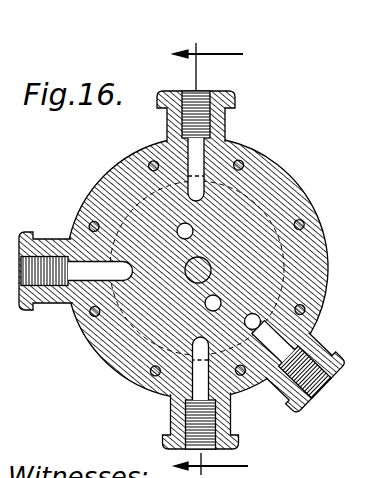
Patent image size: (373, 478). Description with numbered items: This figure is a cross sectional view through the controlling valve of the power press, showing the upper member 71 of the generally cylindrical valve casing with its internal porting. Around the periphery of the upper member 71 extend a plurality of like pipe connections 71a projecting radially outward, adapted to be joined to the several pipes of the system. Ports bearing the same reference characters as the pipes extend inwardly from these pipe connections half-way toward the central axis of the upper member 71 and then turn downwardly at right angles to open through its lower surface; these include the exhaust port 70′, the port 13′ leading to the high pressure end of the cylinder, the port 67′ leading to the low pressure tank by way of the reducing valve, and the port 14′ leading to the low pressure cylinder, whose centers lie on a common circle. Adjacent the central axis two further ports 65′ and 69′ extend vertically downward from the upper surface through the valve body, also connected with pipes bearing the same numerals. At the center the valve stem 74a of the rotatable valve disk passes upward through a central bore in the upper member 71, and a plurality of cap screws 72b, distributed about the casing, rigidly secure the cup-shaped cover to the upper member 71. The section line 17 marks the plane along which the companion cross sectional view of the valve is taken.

The section line 17— 17 is at (228, 248).
The port 67' 67′ is at (192, 88).
The pipe connection 71a is at (159, 112).
The cap screw 72b is at (142, 158).
The port 65' 65′ is at (184, 217).
The valve stem 74a is at (318, 238).
The port 69' 69′ is at (212, 292).
The port 14' 14′ is at (252, 312).
The upper member of the valve casing 71 is at (307, 318).
The port 13' 13′ is at (9, 250).
The exhaust port 70′ is at (231, 430).